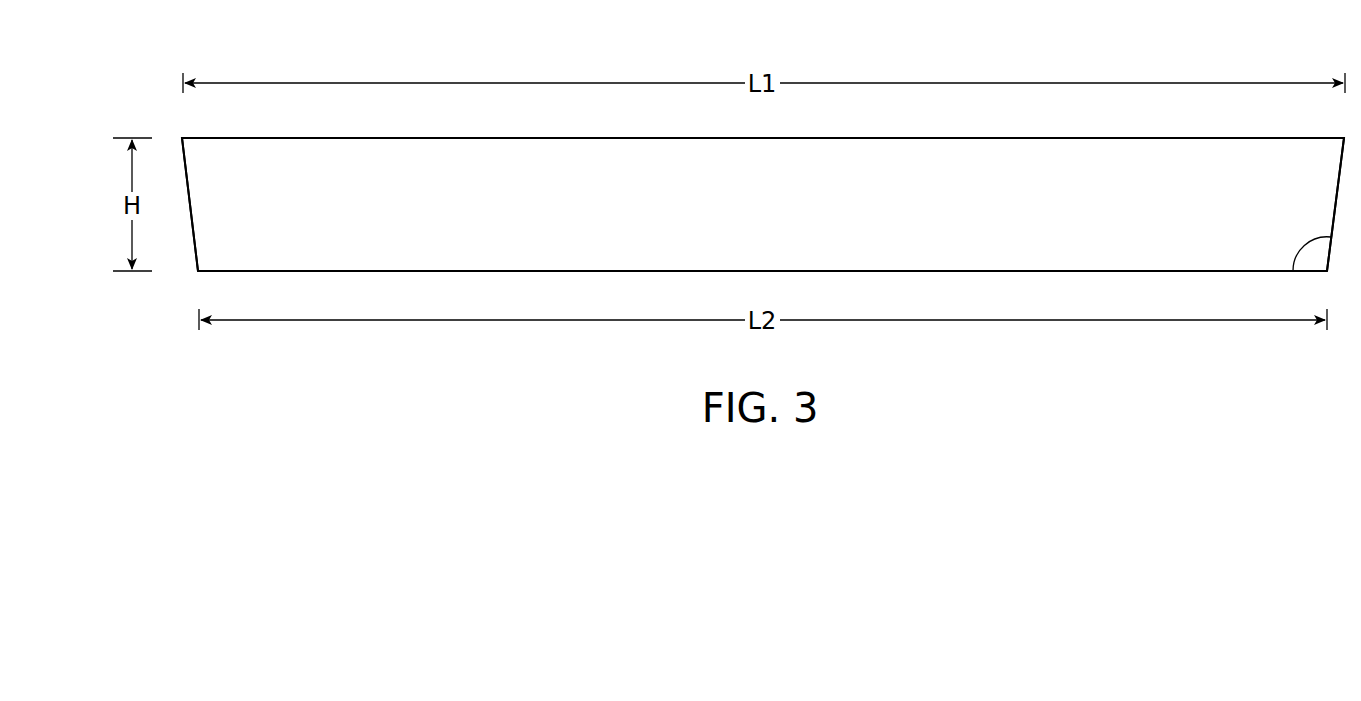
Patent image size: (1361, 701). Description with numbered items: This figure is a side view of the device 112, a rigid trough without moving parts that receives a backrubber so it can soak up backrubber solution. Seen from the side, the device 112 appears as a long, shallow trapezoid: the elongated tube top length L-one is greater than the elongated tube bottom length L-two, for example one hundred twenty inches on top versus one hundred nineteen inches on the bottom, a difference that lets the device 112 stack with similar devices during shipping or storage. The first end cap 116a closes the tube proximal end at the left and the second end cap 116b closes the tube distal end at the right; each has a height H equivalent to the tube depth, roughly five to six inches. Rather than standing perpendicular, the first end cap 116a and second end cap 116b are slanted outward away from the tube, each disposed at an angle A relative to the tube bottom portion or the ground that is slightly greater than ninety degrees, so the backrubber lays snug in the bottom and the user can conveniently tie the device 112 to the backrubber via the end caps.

The device 112 is at (172, 124).
The first end cap 116a is at (190, 205).
The second end cap 116b is at (1338, 184).
The angle A is at (1298, 257).